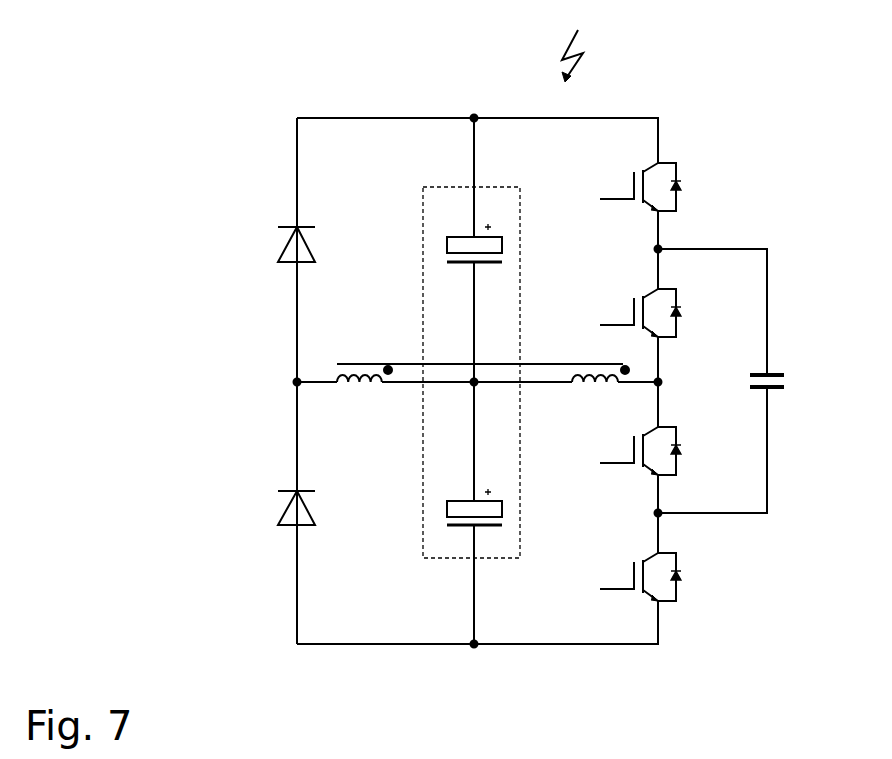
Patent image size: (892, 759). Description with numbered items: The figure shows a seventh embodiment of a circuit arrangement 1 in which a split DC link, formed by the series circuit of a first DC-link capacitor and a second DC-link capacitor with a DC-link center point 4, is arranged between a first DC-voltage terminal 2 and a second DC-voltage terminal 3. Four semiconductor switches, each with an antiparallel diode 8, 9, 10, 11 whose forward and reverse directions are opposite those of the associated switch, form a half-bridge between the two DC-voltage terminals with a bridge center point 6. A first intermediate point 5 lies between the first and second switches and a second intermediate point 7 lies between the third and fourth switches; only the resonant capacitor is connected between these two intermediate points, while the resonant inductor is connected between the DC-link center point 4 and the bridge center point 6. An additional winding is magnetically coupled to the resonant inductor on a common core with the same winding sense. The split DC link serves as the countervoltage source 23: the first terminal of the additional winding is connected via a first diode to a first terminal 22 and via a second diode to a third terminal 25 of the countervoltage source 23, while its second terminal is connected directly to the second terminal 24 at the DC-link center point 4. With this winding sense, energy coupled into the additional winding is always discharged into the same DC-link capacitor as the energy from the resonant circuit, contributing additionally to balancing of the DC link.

The circuit arrangement 1 is at (565, 55).
The first DC-voltage terminal 2 is at (476, 113).
The second DC-voltage terminal 3 is at (476, 650).
The DC-link center point 4 is at (476, 384).
The first intermediate point 5 is at (656, 249).
The bridge center point 6 is at (662, 380).
The second intermediate point 7 is at (655, 512).
The antiparallel diode 8 is at (680, 183).
The antiparallel diode 9 is at (680, 309).
The antiparallel diode 10 is at (680, 447).
The antiparallel diode 11 is at (680, 573).
The first terminal of the countervoltage source 22 is at (478, 169).
The countervoltage source 23 is at (521, 277).
The second terminal of the countervoltage source 24 is at (408, 388).
The third terminal of the countervoltage source 25 is at (478, 577).